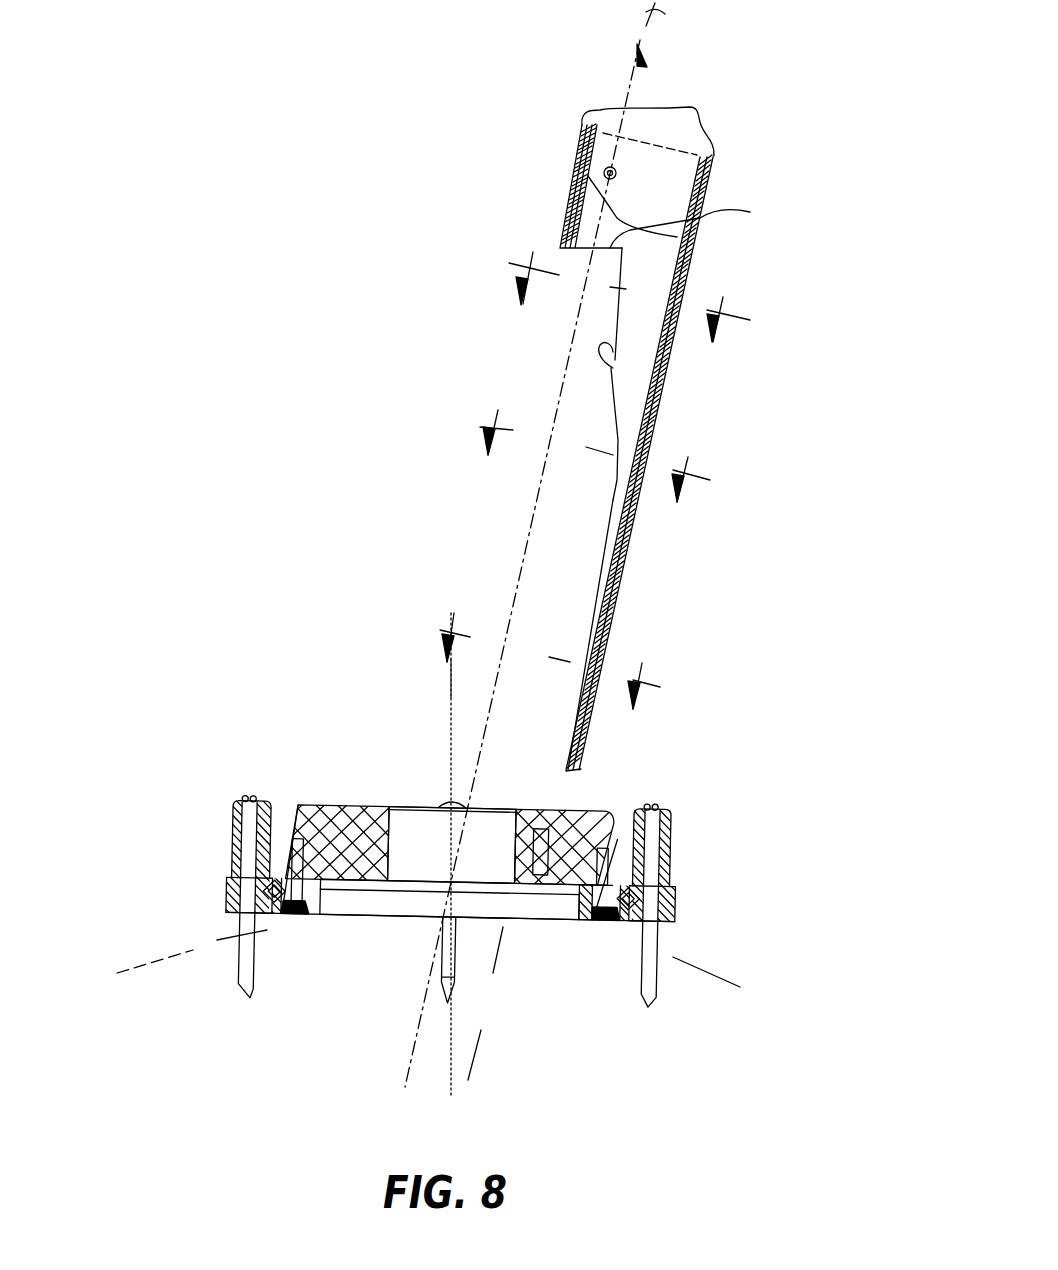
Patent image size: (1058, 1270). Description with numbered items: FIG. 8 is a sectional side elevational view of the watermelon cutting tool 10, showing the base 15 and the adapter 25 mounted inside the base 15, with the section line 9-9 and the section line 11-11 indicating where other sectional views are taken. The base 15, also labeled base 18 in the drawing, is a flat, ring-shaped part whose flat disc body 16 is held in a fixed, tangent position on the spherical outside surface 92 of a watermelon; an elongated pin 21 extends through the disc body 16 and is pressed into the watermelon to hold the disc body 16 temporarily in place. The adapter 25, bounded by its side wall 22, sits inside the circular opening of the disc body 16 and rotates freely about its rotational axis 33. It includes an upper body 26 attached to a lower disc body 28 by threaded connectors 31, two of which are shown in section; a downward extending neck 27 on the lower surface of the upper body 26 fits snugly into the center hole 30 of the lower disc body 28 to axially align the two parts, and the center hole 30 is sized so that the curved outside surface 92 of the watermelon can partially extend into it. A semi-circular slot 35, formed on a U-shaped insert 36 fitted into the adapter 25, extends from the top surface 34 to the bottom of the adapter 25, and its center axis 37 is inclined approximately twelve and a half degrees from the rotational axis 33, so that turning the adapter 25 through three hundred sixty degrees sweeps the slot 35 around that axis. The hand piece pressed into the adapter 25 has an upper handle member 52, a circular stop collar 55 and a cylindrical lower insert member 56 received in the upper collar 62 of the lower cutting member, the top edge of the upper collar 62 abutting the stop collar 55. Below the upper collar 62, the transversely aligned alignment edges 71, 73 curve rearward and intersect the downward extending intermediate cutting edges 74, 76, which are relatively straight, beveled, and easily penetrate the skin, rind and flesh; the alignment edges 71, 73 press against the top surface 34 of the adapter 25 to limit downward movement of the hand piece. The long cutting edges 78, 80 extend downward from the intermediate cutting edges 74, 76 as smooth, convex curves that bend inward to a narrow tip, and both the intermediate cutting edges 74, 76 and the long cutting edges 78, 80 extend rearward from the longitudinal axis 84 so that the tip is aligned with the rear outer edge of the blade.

The section line 9- 9 is at (629, 276).
The watermelon cutting tool 10 is at (595, 435).
The section line 11- 11 is at (551, 638).
The base 15 is at (176, 867).
The disc body 16 is at (676, 897).
The base 18 is at (615, 922).
The elongated pin 21 is at (247, 991).
The side wall 22 is at (619, 838).
The adapter 25 is at (293, 764).
The upper body 26 is at (282, 797).
The neck 27 is at (326, 893).
The lower disc body 28 is at (542, 922).
The center hole 30 is at (425, 895).
The threaded connector 31 is at (407, 837).
The rotational axis 33 is at (452, 687).
The top surface 34 is at (341, 805).
The semi-circular slot 35 is at (587, 783).
The U-shaped insert 36 is at (548, 806).
The center axis 37 is at (510, 1068).
The upper handle member 52 is at (695, 102).
The stop collar 55 is at (713, 150).
The lower insert member 56 is at (682, 186).
The upper collar 62 is at (570, 170).
The alignment edge 71 is at (689, 206).
The alignment edge 73 is at (719, 217).
The intermediate cutting edge 74 is at (684, 371).
The intermediate cutting edge 76 is at (614, 362).
The long cutting edge 78 is at (612, 520).
The long cutting edge 80 is at (668, 635).
The longitudinal axis 84 is at (534, 530).
The outside surface 92 is at (700, 963).